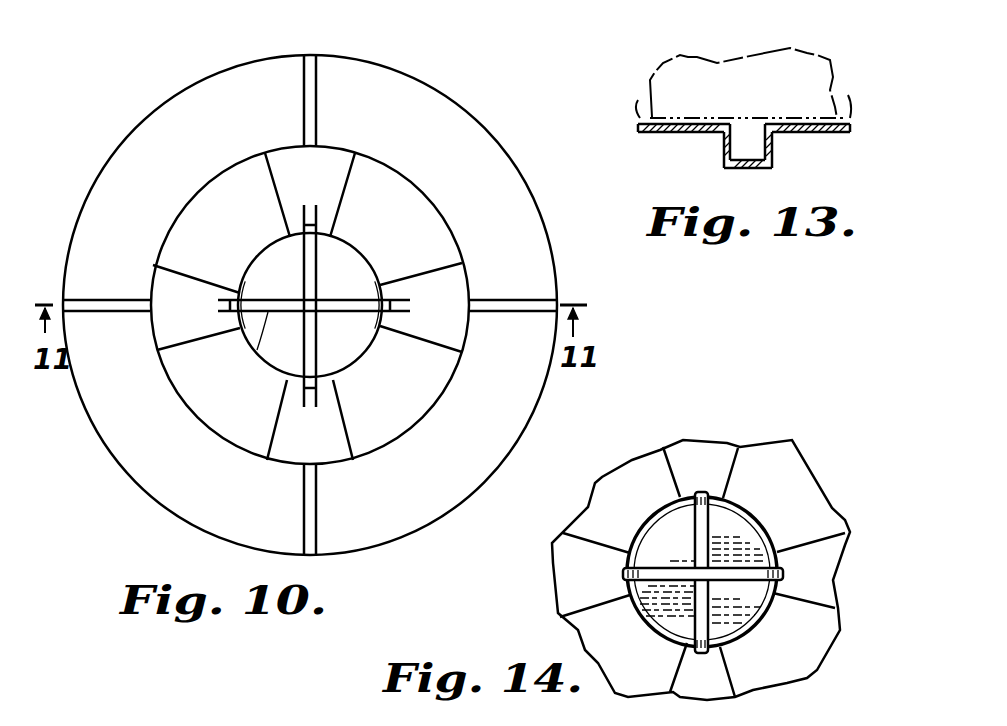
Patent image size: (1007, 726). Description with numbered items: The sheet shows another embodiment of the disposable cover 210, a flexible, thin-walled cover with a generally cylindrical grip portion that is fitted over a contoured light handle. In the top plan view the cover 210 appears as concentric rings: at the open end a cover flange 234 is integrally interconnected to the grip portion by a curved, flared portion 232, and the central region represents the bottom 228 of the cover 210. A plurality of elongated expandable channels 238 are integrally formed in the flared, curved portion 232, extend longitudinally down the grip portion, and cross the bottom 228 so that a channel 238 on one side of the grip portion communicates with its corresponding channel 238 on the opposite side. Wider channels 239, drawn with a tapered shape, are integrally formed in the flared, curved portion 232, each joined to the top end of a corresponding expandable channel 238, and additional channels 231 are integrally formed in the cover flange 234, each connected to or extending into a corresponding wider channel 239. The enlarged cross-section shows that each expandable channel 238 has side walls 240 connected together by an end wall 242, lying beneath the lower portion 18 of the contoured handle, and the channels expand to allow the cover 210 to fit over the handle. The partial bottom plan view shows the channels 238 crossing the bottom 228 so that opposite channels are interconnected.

In FIG. 10, the disposable cover 210 is at (301, 315).
In FIG. 10, the cover flange 234 is at (456, 114).
In FIG. 10, the additional channels 231 is at (497, 303).
In FIG. 10, the curved, flared portion 232 is at (203, 215).
In FIG. 14, the curved, flared portion 232 is at (618, 485).
In FIG. 10, the wider channels 239 is at (315, 155).
In FIG. 14, the wider channels 239 is at (820, 543).
In FIG. 10, the elongated expandable channels 238 is at (310, 347).
In FIG. 13, the elongated expandable channels 238 is at (751, 120).
In FIG. 14, the elongated expandable channels 238 is at (727, 500).
In FIG. 10, the bottom of the cover 228 is at (357, 350).
In FIG. 13, the bottom of the cover 228 is at (663, 133).
In FIG. 14, the bottom of the cover 228 is at (735, 537).
In FIG. 13, the lower portion of the contoured handle 18 is at (695, 58).
In FIG. 13, the side walls 240 is at (725, 150).
In FIG. 13, the end wall 242 is at (737, 168).